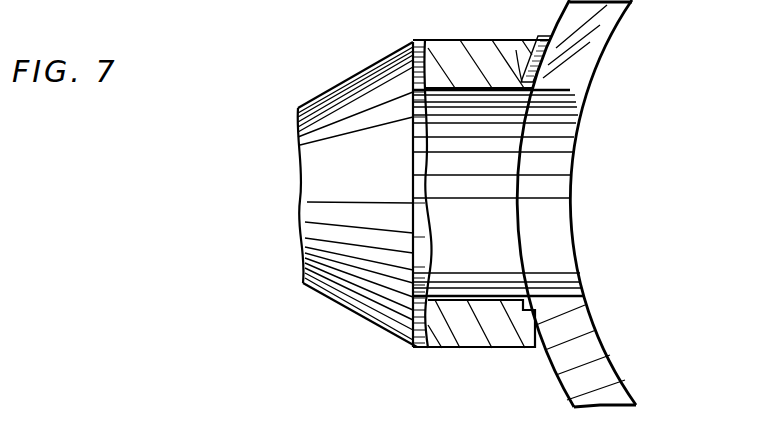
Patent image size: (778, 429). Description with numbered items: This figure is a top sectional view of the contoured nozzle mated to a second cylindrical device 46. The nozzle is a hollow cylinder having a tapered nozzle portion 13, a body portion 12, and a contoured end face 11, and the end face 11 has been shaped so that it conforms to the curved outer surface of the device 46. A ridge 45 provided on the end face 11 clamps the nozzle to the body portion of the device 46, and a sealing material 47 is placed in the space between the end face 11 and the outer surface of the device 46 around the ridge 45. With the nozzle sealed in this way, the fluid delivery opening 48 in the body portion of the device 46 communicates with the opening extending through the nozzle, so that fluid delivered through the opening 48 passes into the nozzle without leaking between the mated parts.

The nozzle portion 13 is at (362, 83).
The end face 11 is at (528, 80).
The body portion 12 is at (462, 338).
The sealing material 47 is at (540, 40).
The fluid delivery opening 48 is at (572, 162).
The second cylindrical device 46 is at (606, 44).
The ridge 45 is at (522, 82).